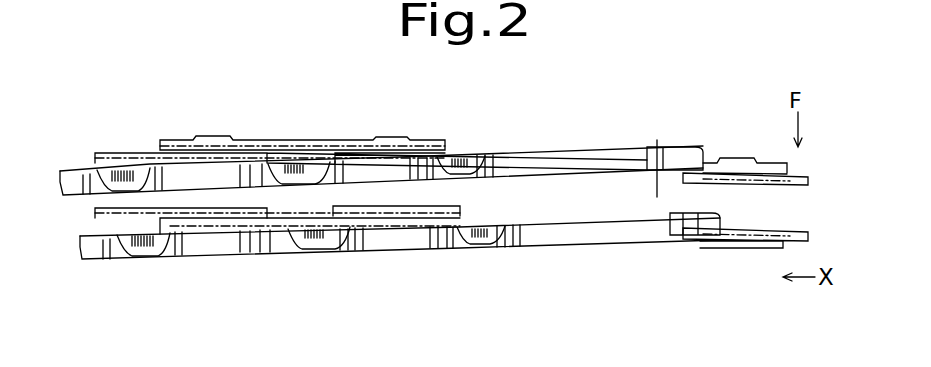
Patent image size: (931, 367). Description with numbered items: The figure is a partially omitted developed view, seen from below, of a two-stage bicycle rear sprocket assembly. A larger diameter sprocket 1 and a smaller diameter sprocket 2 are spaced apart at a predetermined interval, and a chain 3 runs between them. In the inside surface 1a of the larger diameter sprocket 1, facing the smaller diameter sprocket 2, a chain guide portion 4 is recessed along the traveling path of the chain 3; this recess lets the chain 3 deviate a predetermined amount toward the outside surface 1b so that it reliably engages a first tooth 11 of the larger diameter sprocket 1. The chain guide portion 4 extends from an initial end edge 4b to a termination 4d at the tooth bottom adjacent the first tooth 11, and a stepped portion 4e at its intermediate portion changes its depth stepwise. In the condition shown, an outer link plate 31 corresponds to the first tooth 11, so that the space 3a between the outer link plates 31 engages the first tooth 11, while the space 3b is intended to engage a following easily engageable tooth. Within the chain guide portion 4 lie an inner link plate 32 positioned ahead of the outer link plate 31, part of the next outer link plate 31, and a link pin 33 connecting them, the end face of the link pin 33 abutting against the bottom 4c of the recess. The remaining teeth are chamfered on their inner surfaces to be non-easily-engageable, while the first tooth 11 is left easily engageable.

The larger diameter sprocket 1 is at (400, 248).
The inside surface 1a is at (152, 235).
The outside surface 1b is at (219, 258).
The smaller diameter sprocket 2 is at (84, 170).
The chain 3 is at (435, 140).
The space between outer link plates 3a is at (655, 140).
The space between link plates 3b is at (487, 190).
The chain guide portion 4 is at (437, 225).
The initial end edge 4b is at (247, 260).
The bottom 4c is at (463, 232).
The termination 4d is at (510, 232).
The stepped portion 4e is at (348, 232).
The first tooth 11 is at (651, 232).
The outer link plate 31 is at (683, 228).
The inner link plate 32 is at (488, 250).
The link pin 33 is at (237, 257).